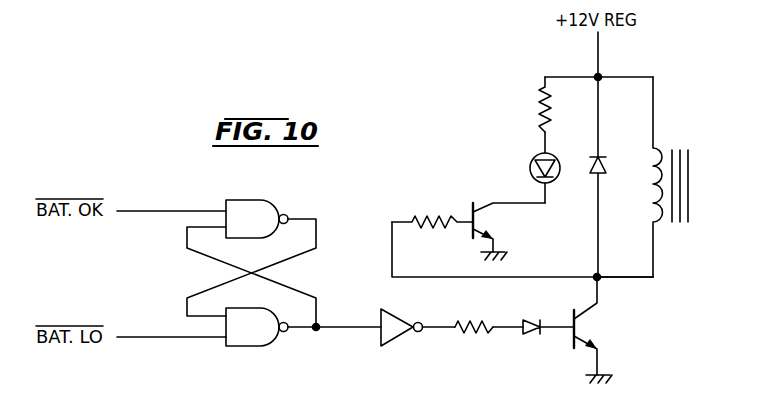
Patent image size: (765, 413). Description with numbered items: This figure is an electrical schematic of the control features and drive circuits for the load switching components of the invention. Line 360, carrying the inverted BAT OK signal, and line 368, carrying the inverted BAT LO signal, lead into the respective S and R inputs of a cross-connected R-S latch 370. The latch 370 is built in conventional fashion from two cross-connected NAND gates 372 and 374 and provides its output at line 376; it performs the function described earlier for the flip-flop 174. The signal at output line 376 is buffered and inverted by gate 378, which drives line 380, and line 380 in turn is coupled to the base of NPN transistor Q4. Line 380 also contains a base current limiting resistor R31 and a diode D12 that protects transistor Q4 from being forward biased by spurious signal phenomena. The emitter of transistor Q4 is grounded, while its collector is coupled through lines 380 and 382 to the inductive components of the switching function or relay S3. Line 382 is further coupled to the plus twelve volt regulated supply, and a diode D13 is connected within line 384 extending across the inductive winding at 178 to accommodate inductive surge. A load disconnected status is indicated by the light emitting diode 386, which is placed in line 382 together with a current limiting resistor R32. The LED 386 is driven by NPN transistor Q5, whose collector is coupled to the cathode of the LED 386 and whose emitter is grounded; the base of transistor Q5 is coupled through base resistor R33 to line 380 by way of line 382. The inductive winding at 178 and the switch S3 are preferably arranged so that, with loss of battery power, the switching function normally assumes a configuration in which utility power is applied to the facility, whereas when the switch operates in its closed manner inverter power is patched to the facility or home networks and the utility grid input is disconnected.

The line 360 is at (150, 211).
The line 368 is at (153, 337).
The R-S latch 370 is at (250, 261).
The NAND gate 372 is at (268, 183).
The NAND gate 374 is at (252, 290).
The flip-flop 174 is at (372, 184).
The output line 376 is at (333, 329).
The gate 378 is at (399, 339).
The line 380 is at (437, 325).
The line 382 is at (632, 278).
The line 384 is at (597, 240).
The light emitting diode 386 is at (532, 160).
The inductive winding 178 is at (693, 171).
The base current limiting resistor R31 is at (476, 332).
The current limiting resistor R32 is at (540, 105).
The base resistor R33 is at (437, 184).
The diode D12 is at (534, 318).
The diode D13 is at (607, 166).
The NPN transistor Q4 is at (600, 342).
The NPN transistor Q5 is at (482, 224).
The switching function or relay S3 is at (702, 186).